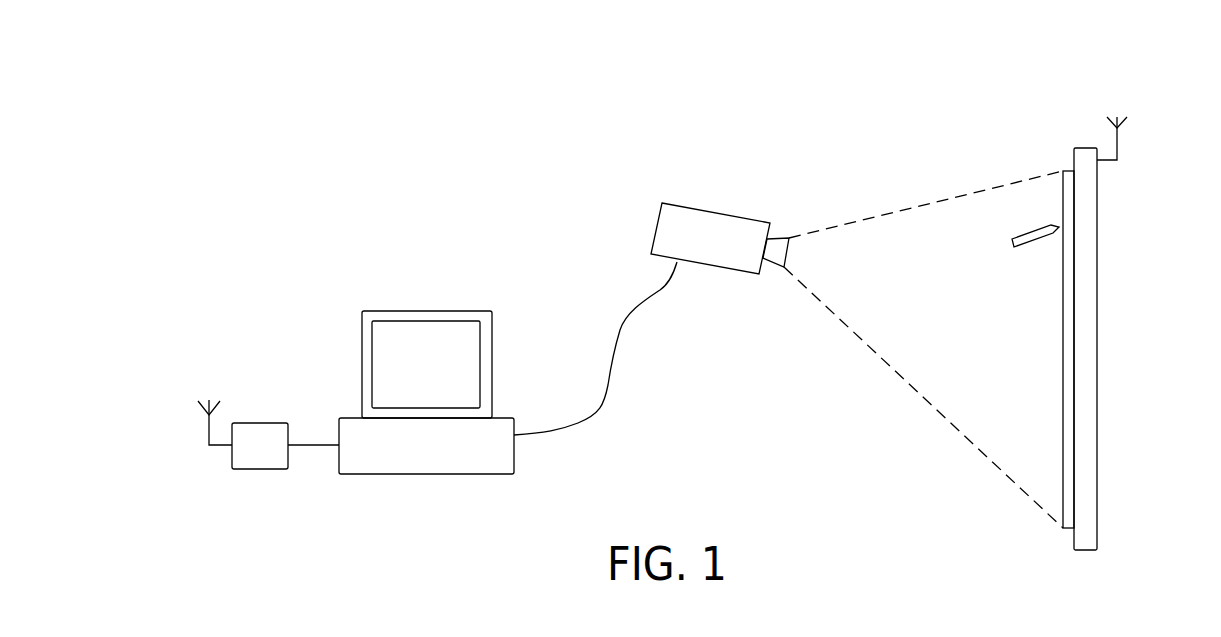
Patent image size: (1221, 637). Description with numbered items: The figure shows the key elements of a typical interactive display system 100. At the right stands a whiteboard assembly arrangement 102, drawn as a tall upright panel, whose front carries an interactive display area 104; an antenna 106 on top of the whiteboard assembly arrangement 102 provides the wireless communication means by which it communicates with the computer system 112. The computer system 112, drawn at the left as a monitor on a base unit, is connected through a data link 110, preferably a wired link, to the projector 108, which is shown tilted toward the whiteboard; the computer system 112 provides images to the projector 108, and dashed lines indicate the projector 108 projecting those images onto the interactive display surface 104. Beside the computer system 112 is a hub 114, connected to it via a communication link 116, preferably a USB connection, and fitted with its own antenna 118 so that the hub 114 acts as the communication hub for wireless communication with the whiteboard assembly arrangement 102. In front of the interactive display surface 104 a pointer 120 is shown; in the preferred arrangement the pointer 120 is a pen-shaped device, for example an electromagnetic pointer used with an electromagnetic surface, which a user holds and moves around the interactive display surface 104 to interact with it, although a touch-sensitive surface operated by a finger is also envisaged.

The interactive display system 100 is at (1158, 72).
The whiteboard assembly arrangement 102 is at (1085, 560).
The interactive display area 104 is at (1063, 411).
The antenna 106 is at (1128, 124).
The projector 108 is at (714, 210).
The data link 110 is at (609, 387).
The computer system 112 is at (364, 474).
The hub 114 is at (261, 469).
The communication link 116 is at (314, 446).
The antenna 118 is at (203, 408).
The pointer 120 is at (1018, 250).